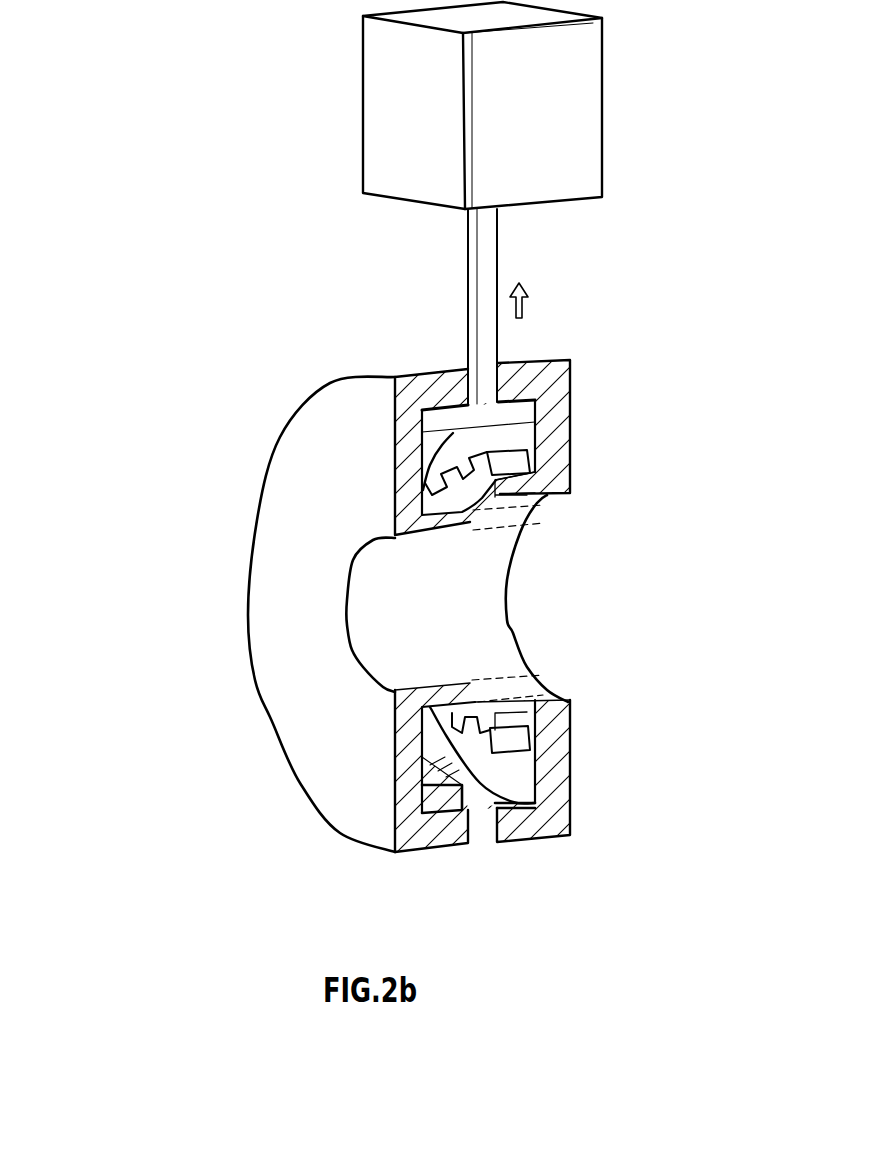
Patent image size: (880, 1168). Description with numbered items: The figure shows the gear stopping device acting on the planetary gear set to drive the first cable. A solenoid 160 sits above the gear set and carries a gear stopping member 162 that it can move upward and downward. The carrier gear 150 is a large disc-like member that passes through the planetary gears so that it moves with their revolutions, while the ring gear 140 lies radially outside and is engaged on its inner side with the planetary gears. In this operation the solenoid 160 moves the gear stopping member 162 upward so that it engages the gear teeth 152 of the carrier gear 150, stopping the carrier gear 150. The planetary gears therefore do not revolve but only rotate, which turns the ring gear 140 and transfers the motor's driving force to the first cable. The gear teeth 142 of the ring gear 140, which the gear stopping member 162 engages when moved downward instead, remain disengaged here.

The ring gear 140 is at (550, 480).
The gear teeth of the ring gear 142 is at (513, 462).
The carrier gear 150 is at (312, 538).
The gear teeth of the carrier gear 152 is at (428, 425).
The solenoid 160 is at (565, 120).
The gear stopping member 162 is at (507, 412).